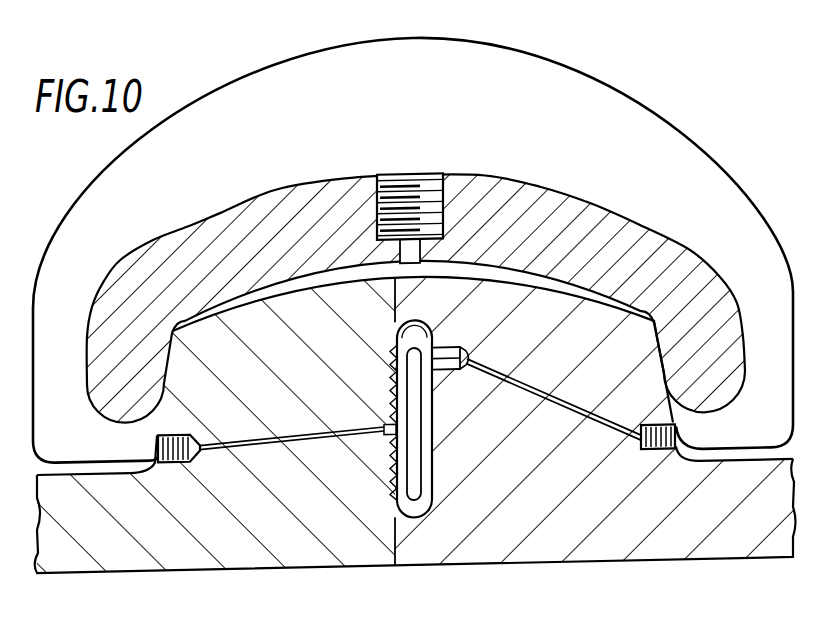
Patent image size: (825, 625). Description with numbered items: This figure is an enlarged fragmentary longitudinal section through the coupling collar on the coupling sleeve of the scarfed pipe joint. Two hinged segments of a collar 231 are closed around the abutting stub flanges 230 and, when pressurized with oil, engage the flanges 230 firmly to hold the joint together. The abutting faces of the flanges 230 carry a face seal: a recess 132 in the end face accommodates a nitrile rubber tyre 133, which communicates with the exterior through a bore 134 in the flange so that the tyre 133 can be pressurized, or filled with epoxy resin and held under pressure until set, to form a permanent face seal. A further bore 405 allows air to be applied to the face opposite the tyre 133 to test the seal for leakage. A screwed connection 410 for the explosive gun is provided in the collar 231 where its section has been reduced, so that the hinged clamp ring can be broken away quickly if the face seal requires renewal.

The collar 231 is at (680, 148).
The stub flanges 230 is at (320, 369).
The screwed connection 410 is at (400, 174).
The nitrile rubber tyre 133 is at (433, 450).
The recess 132 is at (424, 487).
The bore 405 is at (158, 448).
The bore 134 is at (676, 441).